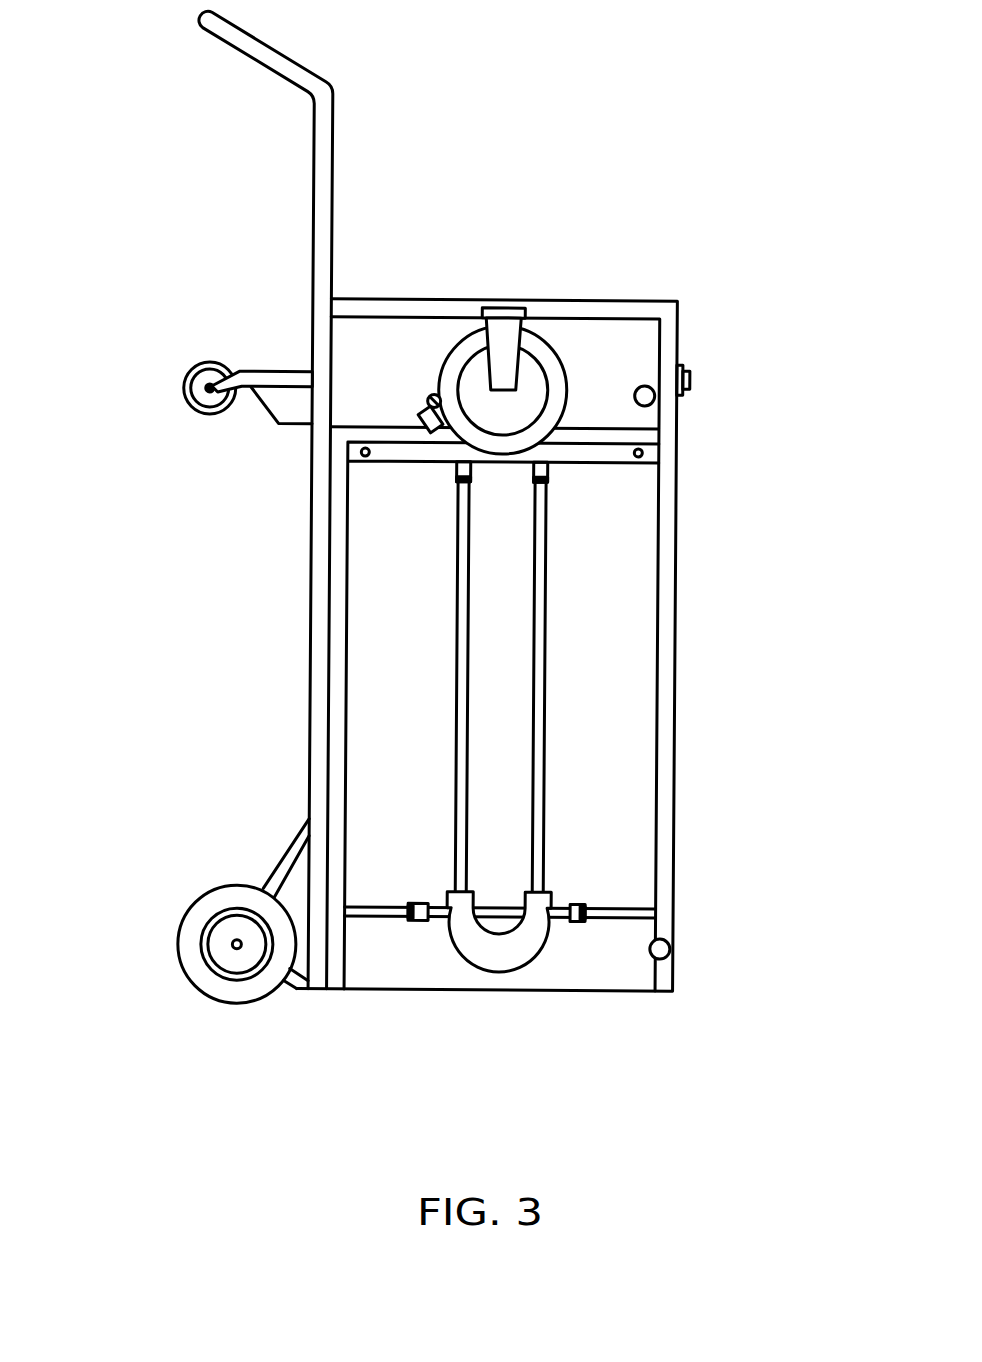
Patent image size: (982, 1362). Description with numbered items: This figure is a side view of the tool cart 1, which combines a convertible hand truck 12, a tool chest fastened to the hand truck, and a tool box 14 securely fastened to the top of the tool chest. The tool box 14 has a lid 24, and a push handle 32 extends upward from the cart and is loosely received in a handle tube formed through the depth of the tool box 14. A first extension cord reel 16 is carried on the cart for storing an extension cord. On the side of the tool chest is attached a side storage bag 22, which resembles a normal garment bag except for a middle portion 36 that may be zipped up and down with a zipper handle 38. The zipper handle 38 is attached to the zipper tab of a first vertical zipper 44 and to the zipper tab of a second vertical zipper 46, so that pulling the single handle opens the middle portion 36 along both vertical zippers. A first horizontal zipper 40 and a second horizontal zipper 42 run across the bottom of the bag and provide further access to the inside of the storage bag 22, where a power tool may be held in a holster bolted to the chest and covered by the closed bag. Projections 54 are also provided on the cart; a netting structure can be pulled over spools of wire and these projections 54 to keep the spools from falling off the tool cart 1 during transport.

The tool cart 1 is at (814, 1101).
The convertible hand truck 12 is at (310, 628).
The tool box 14 is at (675, 351).
The first extension cord reel 16 is at (551, 348).
The side storage bag 22 is at (618, 565).
The lid 24 is at (458, 300).
The push handle 32 is at (329, 264).
The middle portion 36 is at (481, 775).
The zipper handle 38 is at (527, 928).
The first horizontal zipper 40 is at (400, 921).
The second horizontal zipper 42 is at (623, 913).
The first vertical zipper 44 is at (458, 808).
The second vertical zipper 46 is at (547, 614).
The projections 54 is at (651, 398).